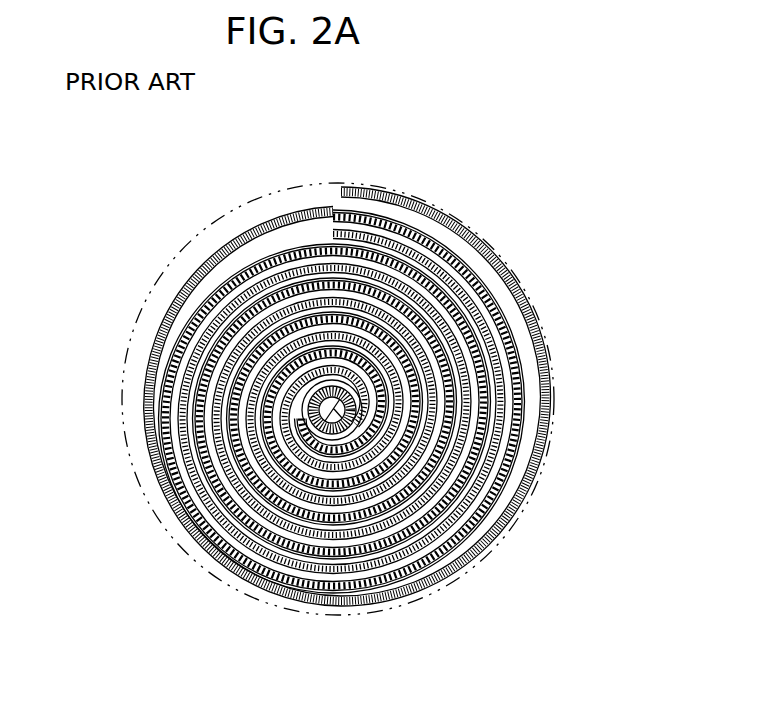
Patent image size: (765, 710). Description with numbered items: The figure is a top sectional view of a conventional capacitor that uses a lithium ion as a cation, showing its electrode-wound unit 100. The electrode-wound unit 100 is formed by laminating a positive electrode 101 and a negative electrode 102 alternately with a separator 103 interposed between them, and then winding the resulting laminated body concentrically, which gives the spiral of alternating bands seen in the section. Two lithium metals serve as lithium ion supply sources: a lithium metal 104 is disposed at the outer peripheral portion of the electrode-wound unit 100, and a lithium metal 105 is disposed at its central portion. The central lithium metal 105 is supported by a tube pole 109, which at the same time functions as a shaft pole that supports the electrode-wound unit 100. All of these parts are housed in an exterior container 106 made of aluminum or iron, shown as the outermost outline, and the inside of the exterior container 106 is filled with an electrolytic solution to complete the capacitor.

The electrode-wound unit 100 is at (345, 362).
The positive electrode 101 is at (422, 258).
The negative electrode 102 is at (530, 380).
The separator 103 is at (261, 279).
The lithium metal 104 is at (190, 264).
The lithium metal 105 is at (308, 417).
The exterior container 106 is at (457, 582).
The tube pole 109 is at (357, 415).